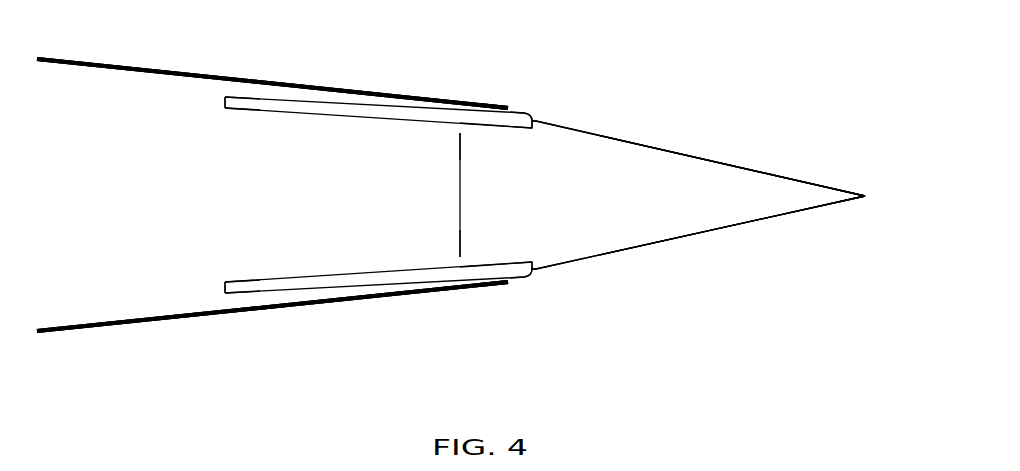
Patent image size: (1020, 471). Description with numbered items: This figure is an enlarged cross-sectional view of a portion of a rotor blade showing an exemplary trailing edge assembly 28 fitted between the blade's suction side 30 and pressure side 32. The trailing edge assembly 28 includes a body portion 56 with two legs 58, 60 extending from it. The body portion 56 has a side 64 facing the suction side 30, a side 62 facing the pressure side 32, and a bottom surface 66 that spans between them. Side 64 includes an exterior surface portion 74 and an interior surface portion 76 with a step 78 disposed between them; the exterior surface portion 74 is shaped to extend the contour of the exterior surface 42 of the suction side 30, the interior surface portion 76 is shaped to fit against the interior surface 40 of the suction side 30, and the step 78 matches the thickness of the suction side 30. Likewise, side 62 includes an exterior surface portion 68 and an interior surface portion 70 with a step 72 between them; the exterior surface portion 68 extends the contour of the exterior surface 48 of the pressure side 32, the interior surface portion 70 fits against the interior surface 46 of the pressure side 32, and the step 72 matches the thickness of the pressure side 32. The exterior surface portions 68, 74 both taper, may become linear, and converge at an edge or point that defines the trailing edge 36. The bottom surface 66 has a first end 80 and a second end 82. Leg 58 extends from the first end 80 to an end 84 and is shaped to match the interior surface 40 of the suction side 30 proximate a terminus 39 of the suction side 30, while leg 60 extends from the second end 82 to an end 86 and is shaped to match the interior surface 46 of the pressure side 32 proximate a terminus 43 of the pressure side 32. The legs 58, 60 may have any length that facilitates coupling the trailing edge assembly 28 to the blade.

The trailing edge assembly 28 is at (805, 135).
The suction side 30 is at (110, 48).
The pressure side 32 is at (110, 345).
The trailing edge 36 is at (865, 196).
The terminus of suction side 39 is at (508, 104).
The interior surface of suction side 40 is at (85, 68).
The exterior surface of suction side 42 is at (230, 78).
The terminus of pressure side 43 is at (508, 283).
The interior surface of pressure side 46 is at (92, 321).
The exterior surface of pressure side 48 is at (230, 313).
The body portion 56 is at (670, 165).
The leg 58 is at (300, 118).
The leg 60 is at (300, 270).
The side 62 is at (724, 255).
The side 64 is at (724, 138).
The bottom surface 66 is at (459, 190).
The exterior surface portion 68 is at (673, 242).
The interior surface portion 70 is at (493, 262).
The step 72 is at (528, 275).
The exterior surface portion 74 is at (597, 132).
The interior surface portion 76 is at (493, 128).
The step 78 is at (528, 115).
The first end 80 is at (459, 134).
The second end 82 is at (459, 256).
The end 84 is at (225, 108).
The end 86 is at (225, 282).